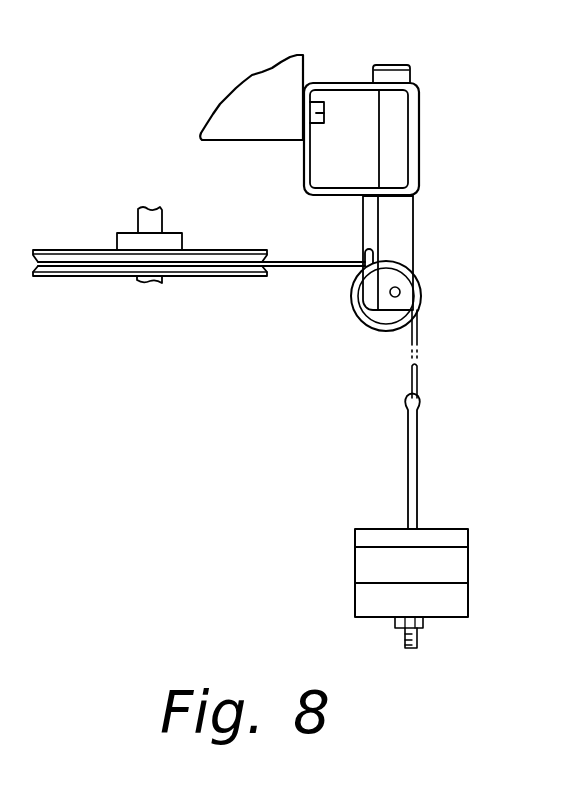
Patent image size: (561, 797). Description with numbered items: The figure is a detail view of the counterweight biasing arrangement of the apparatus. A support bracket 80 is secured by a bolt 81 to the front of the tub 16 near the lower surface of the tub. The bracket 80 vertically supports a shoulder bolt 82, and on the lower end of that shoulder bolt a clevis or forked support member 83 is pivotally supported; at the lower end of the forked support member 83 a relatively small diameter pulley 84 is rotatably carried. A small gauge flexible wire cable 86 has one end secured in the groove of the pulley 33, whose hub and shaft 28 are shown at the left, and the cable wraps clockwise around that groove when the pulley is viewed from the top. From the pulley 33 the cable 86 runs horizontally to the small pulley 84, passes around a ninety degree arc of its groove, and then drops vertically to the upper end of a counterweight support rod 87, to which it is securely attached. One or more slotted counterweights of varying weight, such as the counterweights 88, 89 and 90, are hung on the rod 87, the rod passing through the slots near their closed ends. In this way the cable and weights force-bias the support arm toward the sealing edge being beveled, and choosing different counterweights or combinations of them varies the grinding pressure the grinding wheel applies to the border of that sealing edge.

The tub 16 is at (282, 117).
The shaft 28 is at (153, 217).
The pulley 33 is at (92, 277).
The support bracket 80 is at (420, 148).
The bolt 81 is at (325, 111).
The shoulder bolt 82 is at (393, 119).
The clevis or forked support member 83 is at (403, 229).
The pulley 84 is at (422, 292).
The flexible wire cable 86 is at (303, 261).
The counterweight support rod 87 is at (413, 457).
The counterweight 88 is at (455, 603).
The counterweight 89 is at (453, 565).
The counterweight 90 is at (455, 536).